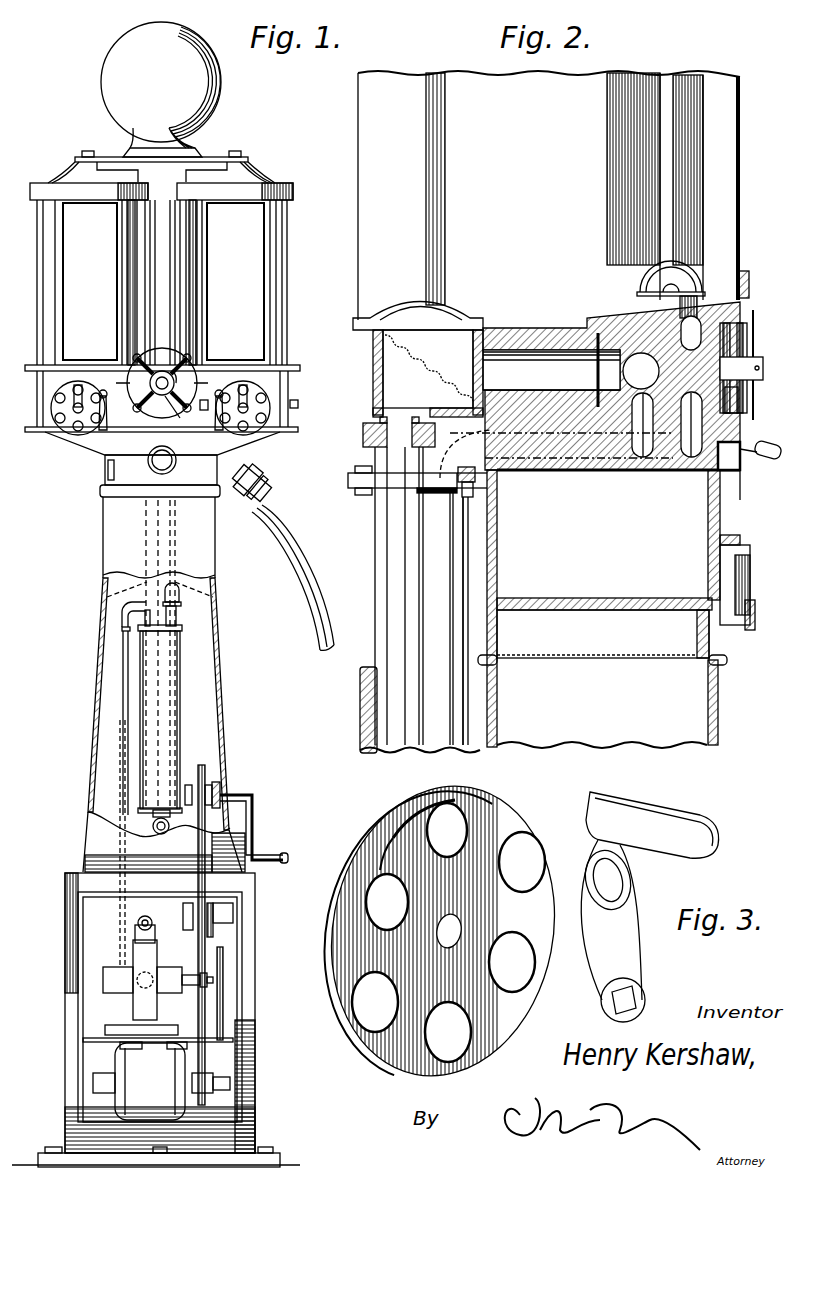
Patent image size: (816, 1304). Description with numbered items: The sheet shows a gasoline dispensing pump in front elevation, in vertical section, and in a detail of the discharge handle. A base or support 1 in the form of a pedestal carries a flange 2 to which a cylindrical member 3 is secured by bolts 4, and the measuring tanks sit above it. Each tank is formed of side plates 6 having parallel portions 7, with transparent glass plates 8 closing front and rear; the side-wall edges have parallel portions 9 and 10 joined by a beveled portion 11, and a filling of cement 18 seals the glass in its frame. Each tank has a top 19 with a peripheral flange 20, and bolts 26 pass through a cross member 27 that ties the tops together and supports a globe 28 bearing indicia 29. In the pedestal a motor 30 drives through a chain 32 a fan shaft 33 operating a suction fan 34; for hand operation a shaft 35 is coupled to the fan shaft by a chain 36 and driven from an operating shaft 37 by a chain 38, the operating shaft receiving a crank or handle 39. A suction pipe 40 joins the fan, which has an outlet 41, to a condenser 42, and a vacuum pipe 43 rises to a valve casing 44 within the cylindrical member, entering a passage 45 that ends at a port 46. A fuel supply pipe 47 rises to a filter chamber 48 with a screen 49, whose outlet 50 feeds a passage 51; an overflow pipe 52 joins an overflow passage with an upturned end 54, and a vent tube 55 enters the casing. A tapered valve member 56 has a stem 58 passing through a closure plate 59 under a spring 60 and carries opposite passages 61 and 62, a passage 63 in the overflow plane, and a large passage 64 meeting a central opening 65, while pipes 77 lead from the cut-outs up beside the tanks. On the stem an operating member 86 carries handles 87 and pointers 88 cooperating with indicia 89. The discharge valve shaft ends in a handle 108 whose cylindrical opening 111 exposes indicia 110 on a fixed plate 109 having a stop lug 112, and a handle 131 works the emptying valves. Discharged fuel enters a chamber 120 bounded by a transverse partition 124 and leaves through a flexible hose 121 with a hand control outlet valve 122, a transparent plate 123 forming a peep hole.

In FIG. 1, the base or support 1 is at (222, 653).
In FIG. 2, the base or support 1 is at (724, 722).
In FIG. 1, the flange 2 is at (163, 318).
In FIG. 2, the flange 2 is at (498, 580).
In FIG. 1, the cylindrical member 3 is at (292, 406).
In FIG. 1, the bolts 4 is at (15, 318).
In FIG. 2, the bolts 4 is at (462, 495).
In FIG. 1, the side plates 6 is at (290, 338).
In FIG. 2, the side plates 6 is at (472, 82).
In FIG. 1, the parallel portions 7 is at (292, 262).
In FIG. 2, the parallel portions 7 is at (410, 178).
In FIG. 1, the plates 8 is at (215, 220).
In FIG. 1, the parallel portion 9 is at (235, 148).
In FIG. 1, the parallel portion 10 is at (62, 180).
In FIG. 1, the beveled or inclined portion 11 is at (248, 280).
In FIG. 1, the filling of cement 18 is at (163, 497).
In FIG. 1, the top 19 is at (270, 186).
In FIG. 1, the peripheral flange 20 is at (72, 793).
In FIG. 1, the bolts 26 is at (84, 153).
In FIG. 1, the cross member 27 is at (115, 157).
In FIG. 1, the globe 28 is at (193, 40).
In FIG. 1, the indicia 29 is at (156, 72).
In FIG. 1, the motor 30 is at (158, 1079).
In FIG. 1, the chain 32 is at (226, 1016).
In FIG. 1, the fan shaft 33 is at (190, 973).
In FIG. 1, the suction fan 34 is at (140, 1000).
In FIG. 1, the shaft 35 is at (233, 895).
In FIG. 1, the chain 36 is at (235, 938).
In FIG. 1, the operating shaft 37 is at (198, 778).
In FIG. 1, the chain 38 is at (169, 826).
In FIG. 1, the crank or handle 39 is at (254, 842).
In FIG. 1, the suction pipe 40 is at (118, 915).
In FIG. 1, the outlet 41 is at (149, 920).
In FIG. 1, the condenser 42 is at (179, 700).
In FIG. 1, the vacuum pipe 43 is at (182, 614).
In FIG. 2, the vacuum pipe 43 is at (470, 726).
In FIG. 2, the valve casing 44 is at (530, 330).
In FIG. 2, the passage 45 is at (562, 478).
In FIG. 2, the port 46 is at (695, 436).
In FIG. 2, the fuel supply pipe 47 is at (382, 582).
In FIG. 2, the filter chamber 48 is at (366, 382).
In FIG. 2, the screen 49 is at (418, 372).
In FIG. 2, the outlet 50 is at (495, 362).
In FIG. 2, the passage 51 is at (498, 378).
In FIG. 1, the overflow pipe 52 is at (106, 598).
In FIG. 2, the upwardly extending end 54 is at (645, 432).
In FIG. 2, the vent tube 55 is at (700, 278).
In FIG. 2, the tapered valve member 56 is at (736, 355).
In FIG. 1, the stem 58 is at (160, 423).
In FIG. 2, the stem 58 is at (762, 362).
In FIG. 1, the closure plate 59 is at (140, 418).
In FIG. 2, the closure plate 59 is at (750, 293).
In FIG. 2, the spring 60 is at (740, 405).
In FIG. 2, the passage 61 is at (665, 352).
In FIG. 2, the passage 62 is at (660, 420).
In FIG. 2, the passage 63 is at (625, 425).
In FIG. 2, the passage 64 is at (630, 327).
In FIG. 2, the central opening 65 is at (595, 375).
In FIG. 1, the pipes 77 is at (133, 251).
In FIG. 1, the operating member 86 is at (165, 368).
In FIG. 1, the handles 87 is at (180, 420).
In FIG. 2, the handles 87 is at (750, 471).
In FIG. 1, the pointers or index members 88 is at (186, 362).
In FIG. 2, the pointers or index members 88 is at (754, 318).
In FIG. 1, the indicia 89 is at (190, 372).
In FIG. 1, the handle 108 is at (84, 375).
In FIG. 3, the handle 108 is at (700, 816).
In FIG. 1, the plate 109 is at (50, 411).
In FIG. 3, the plate 109 is at (510, 815).
In FIG. 3, the indicia 110 is at (538, 848).
In FIG. 3, the cylindrical opening 111 is at (632, 876).
In FIG. 3, the lug or projection 112 is at (410, 830).
In FIG. 2, the chamber 120 is at (589, 608).
In FIG. 1, the flexible hose 121 is at (262, 474).
In FIG. 1, the hand control outlet valve 122 is at (271, 506).
In FIG. 2, the transparent plate 123 is at (745, 587).
In FIG. 2, the transverse wall or partition 124 is at (672, 610).
In FIG. 1, the handle 131 is at (215, 404).